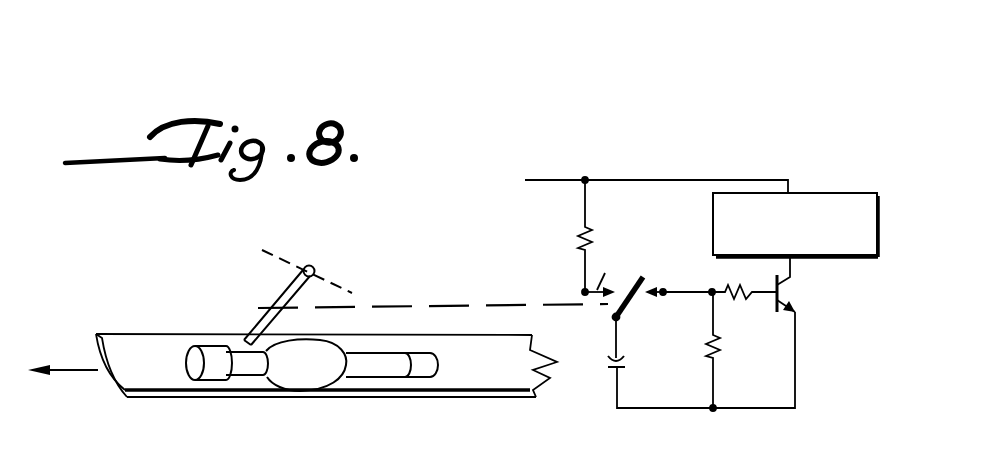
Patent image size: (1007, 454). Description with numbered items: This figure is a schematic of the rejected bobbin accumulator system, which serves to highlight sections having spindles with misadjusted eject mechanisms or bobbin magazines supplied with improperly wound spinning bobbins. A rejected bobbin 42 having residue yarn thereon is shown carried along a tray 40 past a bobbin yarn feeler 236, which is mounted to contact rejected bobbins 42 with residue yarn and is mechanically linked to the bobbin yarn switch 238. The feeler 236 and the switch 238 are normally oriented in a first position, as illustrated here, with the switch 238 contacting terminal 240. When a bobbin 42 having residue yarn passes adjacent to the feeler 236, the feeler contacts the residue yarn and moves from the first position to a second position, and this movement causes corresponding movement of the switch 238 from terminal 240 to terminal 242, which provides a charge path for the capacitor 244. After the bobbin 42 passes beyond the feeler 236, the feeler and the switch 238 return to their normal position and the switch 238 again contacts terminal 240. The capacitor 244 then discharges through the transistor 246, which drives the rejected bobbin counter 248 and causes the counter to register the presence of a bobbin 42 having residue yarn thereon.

The tray 40 is at (166, 374).
The rejected bobbin 42 is at (392, 370).
The bobbin yarn feeler 236 is at (275, 301).
The bobbin yarn switch 238 is at (600, 320).
The terminal 240 is at (659, 296).
The terminal 242 is at (621, 269).
The capacitor 244 is at (622, 367).
The transistor 246 is at (786, 298).
The rejected bobbin counter 248 is at (866, 185).